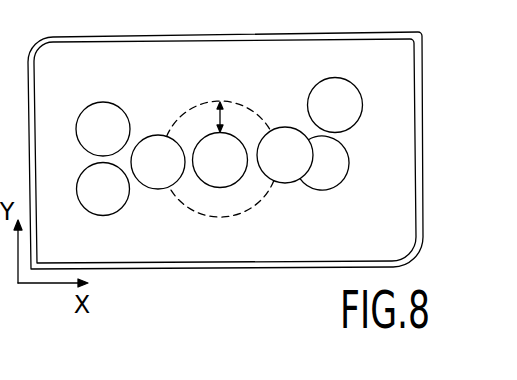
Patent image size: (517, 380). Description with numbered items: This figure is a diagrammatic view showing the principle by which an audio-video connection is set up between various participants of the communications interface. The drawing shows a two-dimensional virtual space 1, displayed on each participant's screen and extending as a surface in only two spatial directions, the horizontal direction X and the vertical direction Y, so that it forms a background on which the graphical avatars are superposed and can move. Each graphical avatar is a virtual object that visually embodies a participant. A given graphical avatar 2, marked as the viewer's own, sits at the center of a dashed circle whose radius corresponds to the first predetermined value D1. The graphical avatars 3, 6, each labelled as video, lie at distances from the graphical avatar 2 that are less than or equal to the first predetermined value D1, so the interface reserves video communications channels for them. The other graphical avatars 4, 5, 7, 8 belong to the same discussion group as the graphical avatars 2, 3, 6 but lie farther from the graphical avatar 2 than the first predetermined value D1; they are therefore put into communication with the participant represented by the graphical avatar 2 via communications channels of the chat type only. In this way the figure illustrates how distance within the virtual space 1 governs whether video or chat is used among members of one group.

The virtual space 1 is at (273, 235).
The graphical avatar 2 is at (218, 180).
The graphical avatar 3 is at (282, 135).
The graphical avatar 4 is at (322, 177).
The graphical avatar 5 is at (333, 90).
The graphical avatar 6 is at (145, 140).
The graphical avatar 7 is at (97, 120).
The graphical avatar 8 is at (105, 202).
The first predetermined value D1 is at (213, 118).